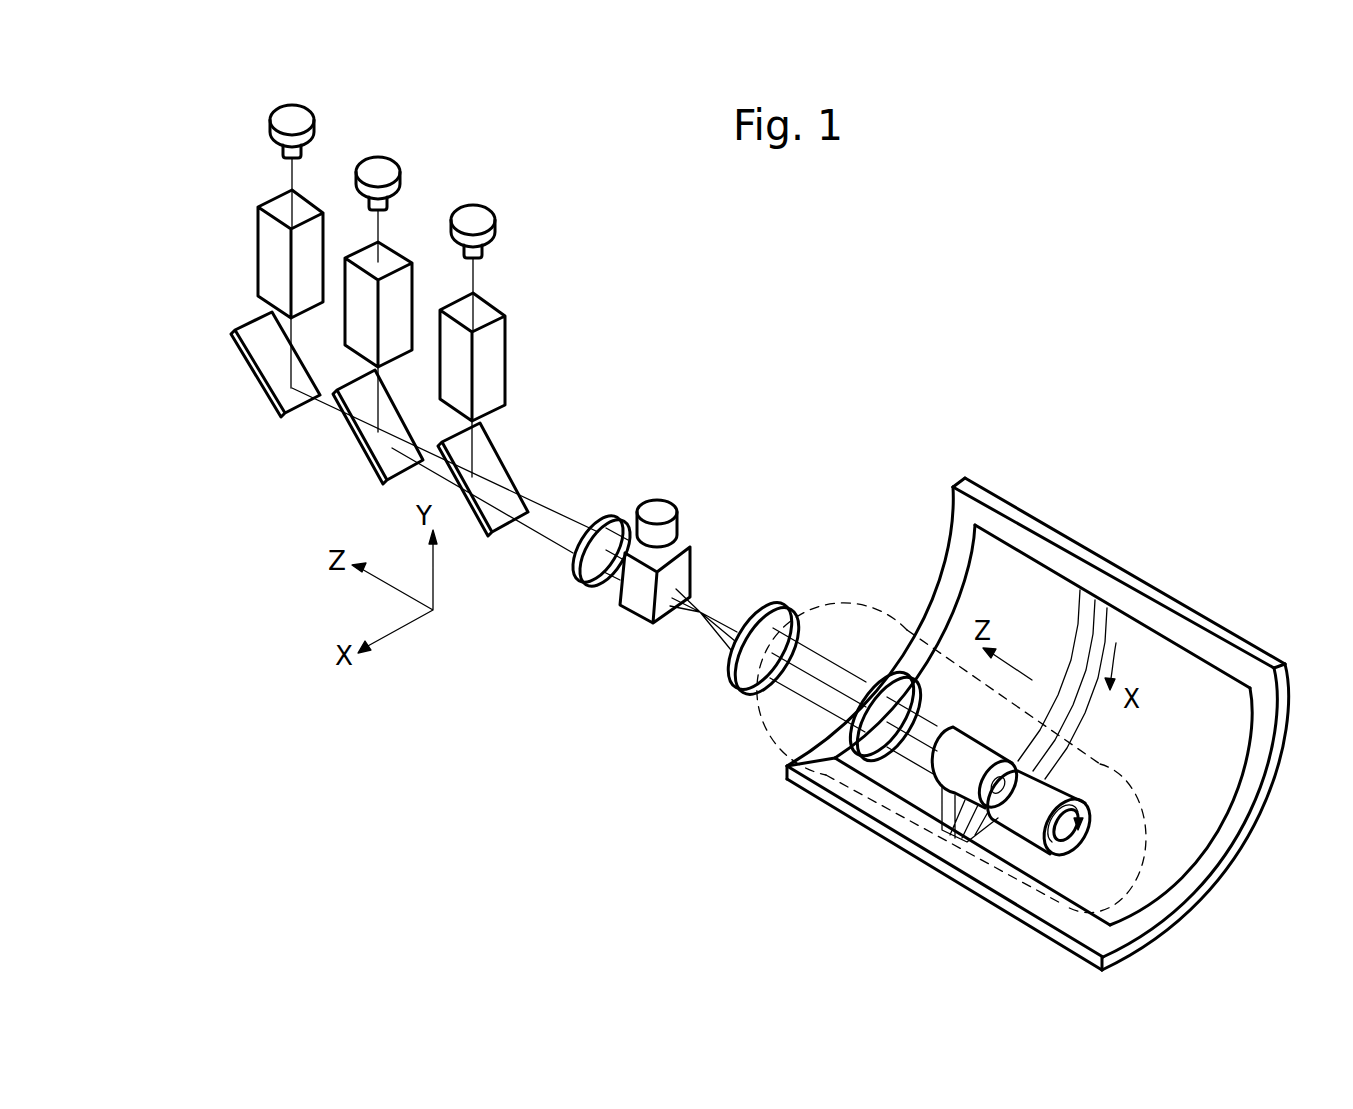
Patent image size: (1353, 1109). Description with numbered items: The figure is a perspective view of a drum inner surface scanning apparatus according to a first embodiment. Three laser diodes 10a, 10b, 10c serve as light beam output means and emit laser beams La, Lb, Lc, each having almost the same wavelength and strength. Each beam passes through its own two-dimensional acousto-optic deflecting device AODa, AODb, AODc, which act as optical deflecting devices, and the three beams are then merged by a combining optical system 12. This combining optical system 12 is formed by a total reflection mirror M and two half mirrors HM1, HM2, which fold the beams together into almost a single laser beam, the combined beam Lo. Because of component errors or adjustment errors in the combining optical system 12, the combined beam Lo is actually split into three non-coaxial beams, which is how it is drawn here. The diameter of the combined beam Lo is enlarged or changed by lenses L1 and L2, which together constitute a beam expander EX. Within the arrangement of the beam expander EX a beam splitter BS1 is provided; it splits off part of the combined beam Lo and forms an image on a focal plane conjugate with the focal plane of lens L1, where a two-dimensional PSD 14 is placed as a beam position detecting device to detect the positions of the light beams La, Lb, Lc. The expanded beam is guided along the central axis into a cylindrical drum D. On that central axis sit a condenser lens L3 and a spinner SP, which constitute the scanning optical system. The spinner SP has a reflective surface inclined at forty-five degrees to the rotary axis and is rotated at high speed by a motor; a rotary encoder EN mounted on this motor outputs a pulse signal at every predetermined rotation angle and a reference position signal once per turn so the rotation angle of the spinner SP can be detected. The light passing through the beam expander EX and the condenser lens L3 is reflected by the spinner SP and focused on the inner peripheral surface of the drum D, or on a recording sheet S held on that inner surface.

The laser diode 10a is at (313, 123).
The laser diode 10b is at (393, 162).
The laser diode 10c is at (497, 220).
The laser beam La is at (290, 178).
The laser beam Lb is at (378, 230).
The laser beam Lc is at (473, 273).
The two-dimensional acousto-optic deflecting device AODa is at (258, 258).
The two-dimensional acousto-optic deflecting device AODb is at (414, 276).
The two-dimensional acousto-optic deflecting device AODc is at (505, 355).
The total reflection mirror M is at (283, 380).
The half mirror HM1 is at (385, 468).
The half mirror HM2 is at (457, 478).
The combining optical system 12 is at (223, 404).
The combined beam Lo is at (563, 498).
The lens L1 is at (580, 590).
The two-dimensional PSD 14 is at (660, 505).
The beam splitter BS1 is at (693, 562).
The lens L2 is at (727, 675).
The beam expander EX is at (692, 714).
The condenser lens L3 is at (890, 670).
The cylindrical drum D is at (988, 487).
The recording sheet S is at (1207, 688).
The spinner SP is at (935, 785).
The rotary encoder EN is at (1022, 818).